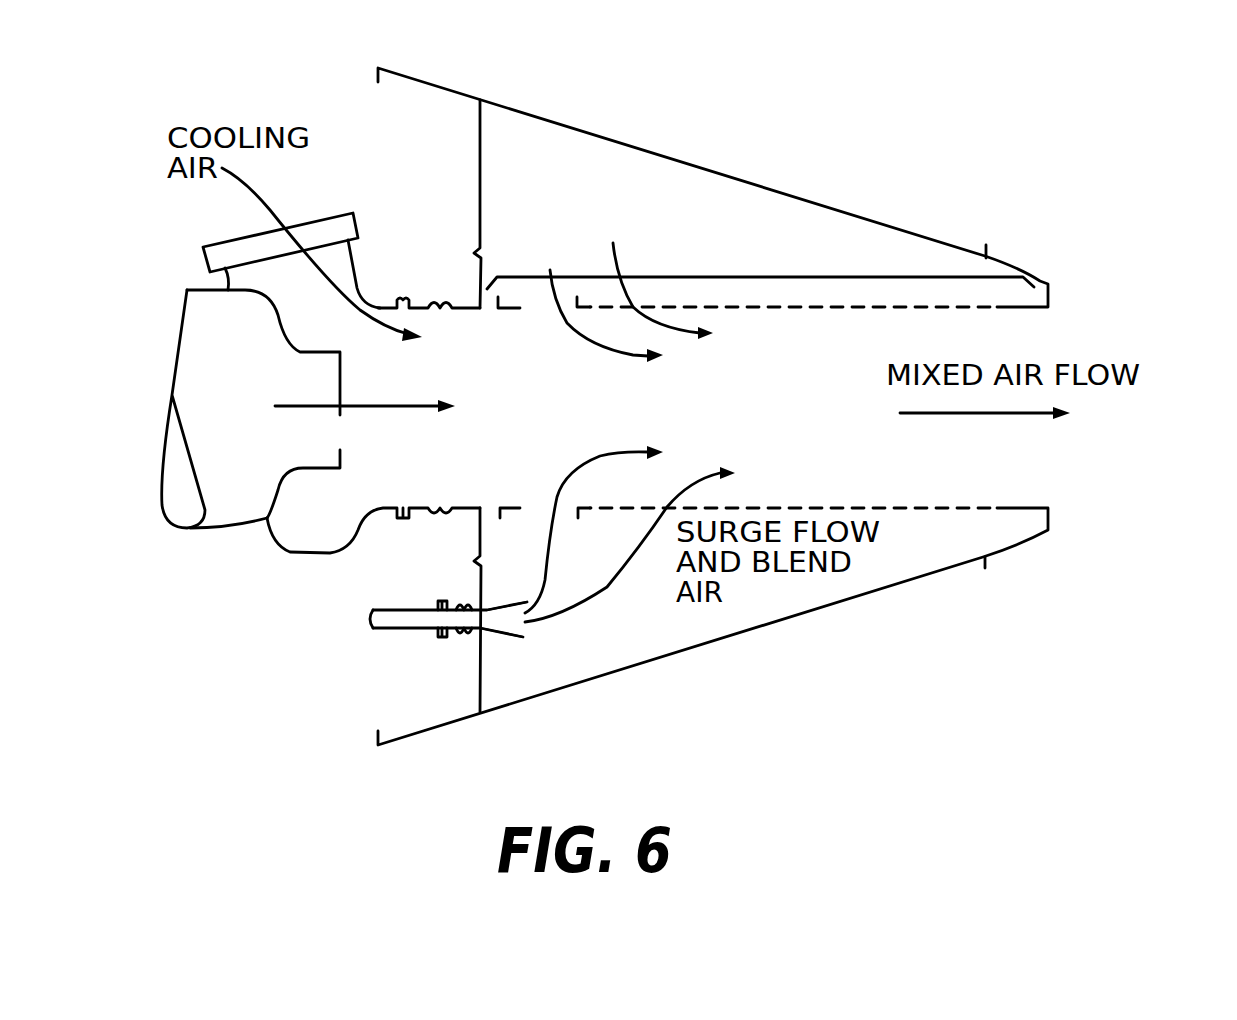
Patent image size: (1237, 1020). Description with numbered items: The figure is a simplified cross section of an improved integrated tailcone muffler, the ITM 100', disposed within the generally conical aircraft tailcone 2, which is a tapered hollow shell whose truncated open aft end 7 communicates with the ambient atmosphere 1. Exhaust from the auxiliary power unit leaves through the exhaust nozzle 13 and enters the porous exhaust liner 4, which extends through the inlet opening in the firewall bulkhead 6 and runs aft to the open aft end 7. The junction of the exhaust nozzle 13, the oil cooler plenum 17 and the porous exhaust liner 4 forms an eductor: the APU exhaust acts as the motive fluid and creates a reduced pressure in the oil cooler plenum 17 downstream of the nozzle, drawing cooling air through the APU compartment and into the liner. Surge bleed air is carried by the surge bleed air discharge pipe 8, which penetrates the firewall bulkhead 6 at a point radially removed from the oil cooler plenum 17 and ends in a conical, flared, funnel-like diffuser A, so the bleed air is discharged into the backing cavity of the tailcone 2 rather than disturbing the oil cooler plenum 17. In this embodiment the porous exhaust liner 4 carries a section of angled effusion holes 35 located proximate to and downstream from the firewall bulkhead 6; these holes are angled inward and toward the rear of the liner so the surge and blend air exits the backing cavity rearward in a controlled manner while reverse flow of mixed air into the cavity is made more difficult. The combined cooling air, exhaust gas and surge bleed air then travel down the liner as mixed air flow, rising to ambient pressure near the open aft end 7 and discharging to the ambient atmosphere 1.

The improved ITM 100' is at (801, 390).
The ambient atmosphere 1 is at (1221, 443).
The tailcone 2 is at (723, 174).
The porous exhaust liner 4 is at (767, 277).
The firewall bulkhead 6 is at (480, 185).
The open aft end 7 is at (1032, 307).
The surge bleed air discharge pipe 8 is at (405, 629).
The exhaust nozzle 13 is at (238, 374).
The oil cooler plenum 17 is at (305, 295).
The angled effusion holes 35 is at (535, 518).
The diffuser A is at (508, 637).